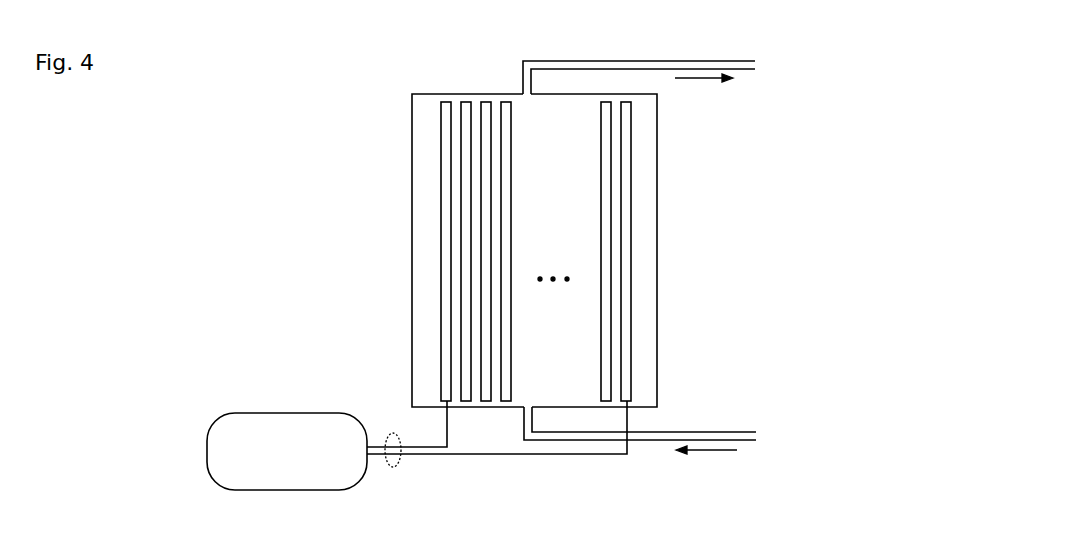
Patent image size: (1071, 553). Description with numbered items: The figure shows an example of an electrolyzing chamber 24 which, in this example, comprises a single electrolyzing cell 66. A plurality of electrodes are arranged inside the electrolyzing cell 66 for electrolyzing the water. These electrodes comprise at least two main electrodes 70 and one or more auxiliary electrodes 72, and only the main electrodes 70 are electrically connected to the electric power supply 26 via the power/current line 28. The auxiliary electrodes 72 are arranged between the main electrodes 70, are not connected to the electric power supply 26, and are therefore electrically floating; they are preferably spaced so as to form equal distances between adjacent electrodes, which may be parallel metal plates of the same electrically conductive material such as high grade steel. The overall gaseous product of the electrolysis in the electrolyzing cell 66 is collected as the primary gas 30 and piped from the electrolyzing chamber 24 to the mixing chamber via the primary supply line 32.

The electrolyzing chamber 24 is at (376, 130).
The electric power supply 26 is at (243, 420).
The power/current line 28 is at (400, 460).
The primary gas 30 is at (718, 62).
The primary supply line 32 is at (665, 58).
The electrolyzing cell 66 is at (423, 108).
The main electrodes 70 is at (447, 378).
The auxiliary electrodes 72 is at (467, 192).